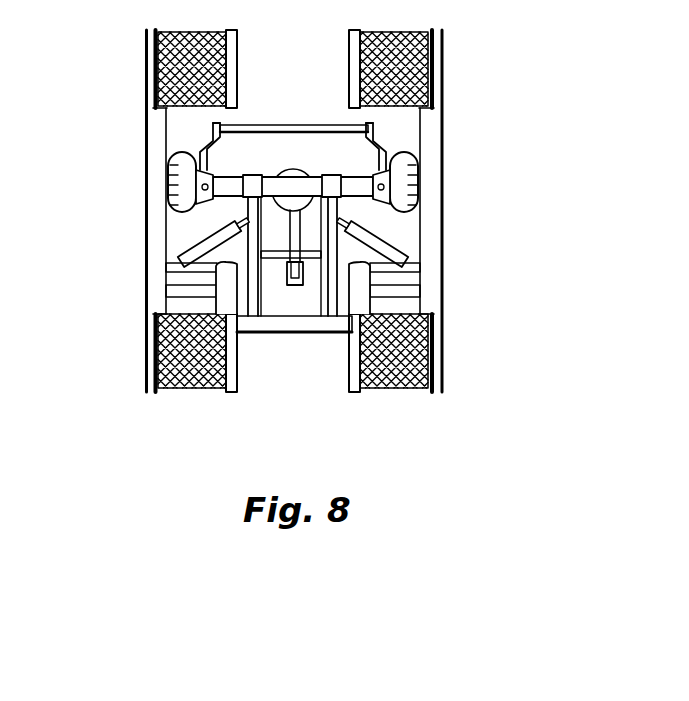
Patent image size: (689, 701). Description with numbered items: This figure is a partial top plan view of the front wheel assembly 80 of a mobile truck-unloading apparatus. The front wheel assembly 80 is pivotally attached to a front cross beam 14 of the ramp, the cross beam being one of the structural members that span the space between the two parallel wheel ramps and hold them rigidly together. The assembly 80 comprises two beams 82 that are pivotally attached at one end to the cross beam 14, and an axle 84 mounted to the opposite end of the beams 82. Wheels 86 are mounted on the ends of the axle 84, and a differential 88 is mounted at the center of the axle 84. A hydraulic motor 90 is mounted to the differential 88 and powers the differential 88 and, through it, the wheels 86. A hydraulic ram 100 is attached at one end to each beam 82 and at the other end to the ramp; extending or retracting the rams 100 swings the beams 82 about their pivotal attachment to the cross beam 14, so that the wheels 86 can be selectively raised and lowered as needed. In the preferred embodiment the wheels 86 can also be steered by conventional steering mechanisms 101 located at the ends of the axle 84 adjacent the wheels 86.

The structural cross beam 14 is at (263, 330).
The front wheel assembly 80 is at (378, 211).
The beam 82 is at (217, 290).
The axle 84 is at (225, 176).
The wheel 86 is at (168, 160).
The differential 88 is at (290, 168).
The hydraulic motor 90 is at (293, 286).
The hydraulic ram 100 is at (198, 243).
The steering mechanism 101 is at (210, 133).